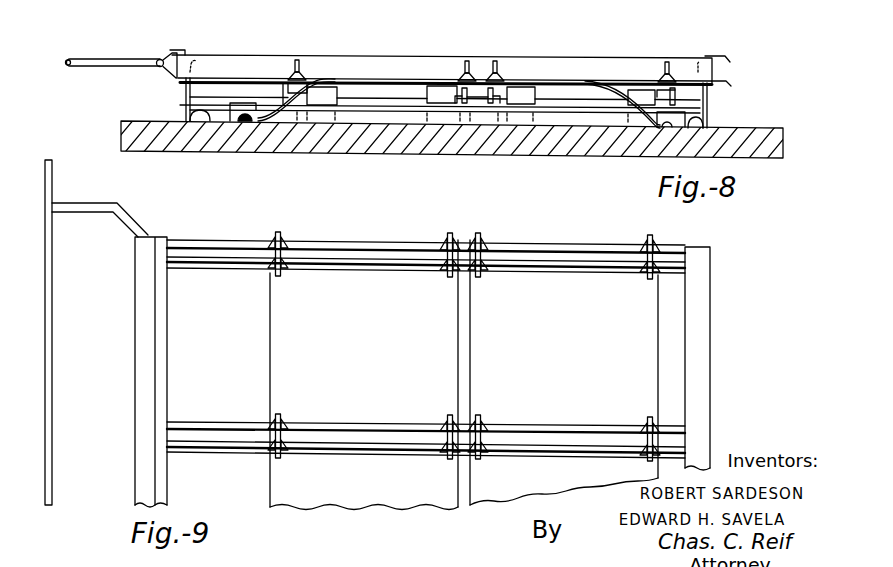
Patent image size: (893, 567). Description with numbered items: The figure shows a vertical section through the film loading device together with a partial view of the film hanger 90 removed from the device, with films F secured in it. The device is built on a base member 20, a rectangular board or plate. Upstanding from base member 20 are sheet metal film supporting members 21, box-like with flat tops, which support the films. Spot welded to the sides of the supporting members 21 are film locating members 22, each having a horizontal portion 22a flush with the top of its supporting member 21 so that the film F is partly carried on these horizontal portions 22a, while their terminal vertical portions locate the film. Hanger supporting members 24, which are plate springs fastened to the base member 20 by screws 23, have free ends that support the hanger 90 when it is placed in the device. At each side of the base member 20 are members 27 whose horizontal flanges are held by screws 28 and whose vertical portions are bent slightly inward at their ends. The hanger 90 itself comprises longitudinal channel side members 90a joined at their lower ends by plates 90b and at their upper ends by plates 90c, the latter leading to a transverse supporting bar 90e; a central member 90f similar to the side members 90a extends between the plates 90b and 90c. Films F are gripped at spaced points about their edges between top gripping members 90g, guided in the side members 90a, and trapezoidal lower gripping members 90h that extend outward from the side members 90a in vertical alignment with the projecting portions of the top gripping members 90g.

In FIG. 8, the base member 20 is at (783, 134).
In FIG. 8, the film supporting member 21 is at (365, 101).
In FIG. 8, the film locating member 22 is at (440, 87).
In FIG. 8, the horizontal portion 22a is at (492, 102).
In FIG. 8, the screw 23 is at (238, 118).
In FIG. 8, the hanger supporting member 24 is at (262, 100).
In FIG. 8, the side member 27 is at (185, 97).
In FIG. 8, the screw 28 is at (192, 112).
In FIG. 8, the film hanger 90 is at (531, 56).
In FIG. 9, the film hanger 90 is at (126, 343).
In FIG. 8, the side member 90a is at (236, 56).
In FIG. 9, the side member 90a is at (212, 244).
In FIG. 8, the lower plate 90b is at (728, 82).
In FIG. 9, the lower plate 90b is at (712, 292).
In FIG. 8, the upper plate 90c is at (171, 51).
In FIG. 9, the upper plate 90c is at (140, 303).
In FIG. 8, the transverse supporting bar 90e is at (70, 58).
In FIG. 9, the transverse supporting bar 90e is at (53, 181).
In FIG. 9, the central member 90f is at (206, 422).
In FIG. 8, the top gripping member 90g is at (299, 70).
In FIG. 9, the top gripping member 90g is at (279, 237).
In FIG. 8, the lower gripping member 90h is at (303, 80).
In FIG. 9, the lower gripping member 90h is at (462, 241).
In FIG. 8, the sheet material F is at (388, 92).
In FIG. 9, the sheet material F is at (282, 345).